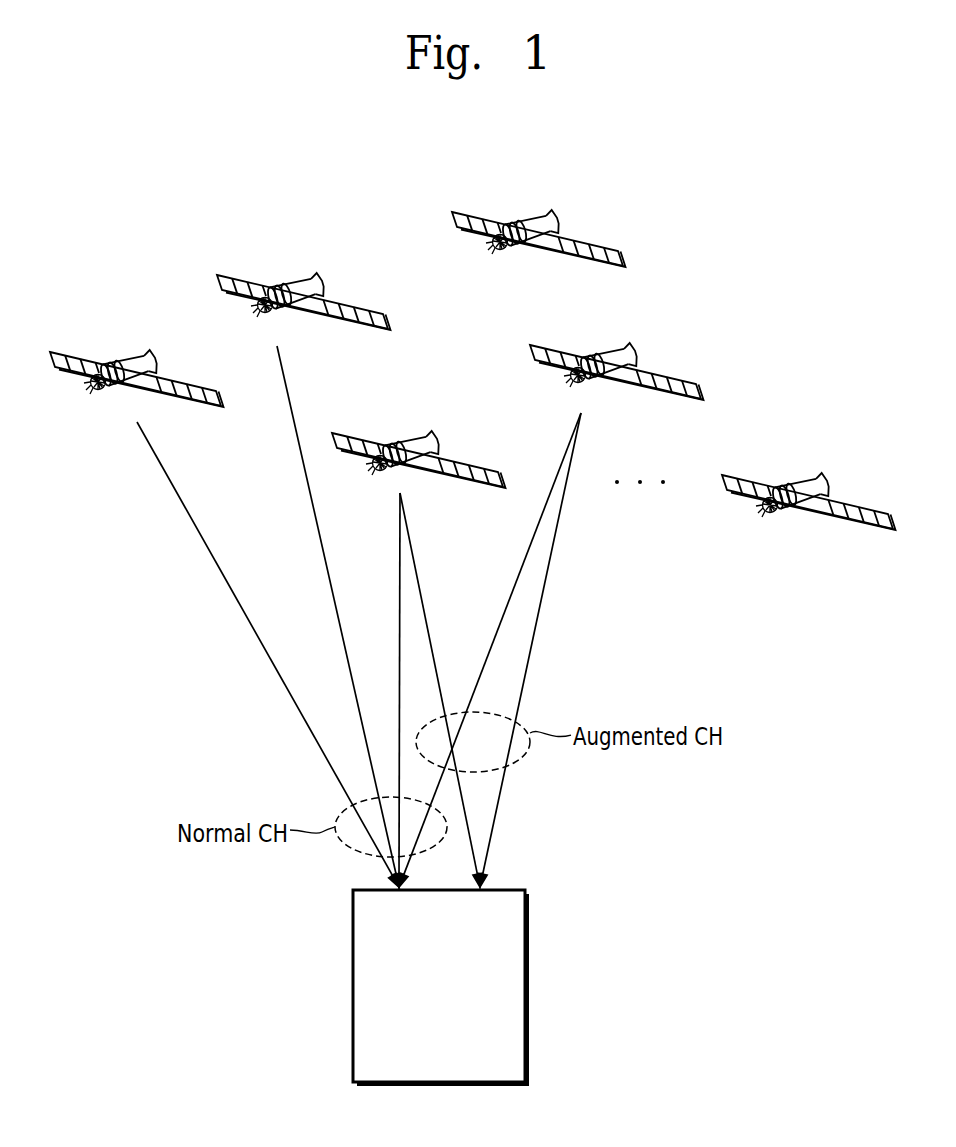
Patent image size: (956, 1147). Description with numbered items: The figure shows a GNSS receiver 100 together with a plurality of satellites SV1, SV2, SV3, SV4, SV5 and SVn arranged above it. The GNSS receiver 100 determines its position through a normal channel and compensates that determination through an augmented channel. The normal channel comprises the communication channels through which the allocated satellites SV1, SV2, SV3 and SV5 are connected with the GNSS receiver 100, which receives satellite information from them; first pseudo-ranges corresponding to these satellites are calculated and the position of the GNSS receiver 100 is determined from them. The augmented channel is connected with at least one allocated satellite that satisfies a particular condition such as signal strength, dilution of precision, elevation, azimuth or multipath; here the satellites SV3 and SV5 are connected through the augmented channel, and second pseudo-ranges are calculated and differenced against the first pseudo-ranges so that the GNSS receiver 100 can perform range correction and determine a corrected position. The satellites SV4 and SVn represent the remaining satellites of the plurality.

The satellite SV1 is at (98, 352).
The satellite SV2 is at (270, 276).
The satellite SV3 is at (377, 441).
The satellite SV4 is at (578, 241).
The satellite SV5 is at (669, 378).
The satellite SVn is at (770, 485).
The GNSS receiver 100 is at (527, 983).